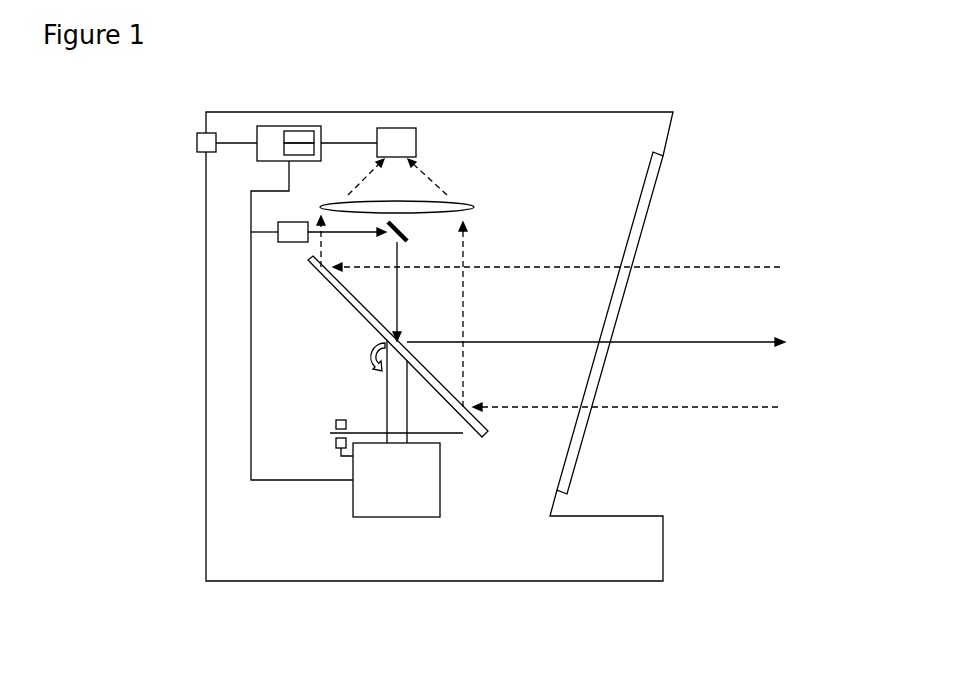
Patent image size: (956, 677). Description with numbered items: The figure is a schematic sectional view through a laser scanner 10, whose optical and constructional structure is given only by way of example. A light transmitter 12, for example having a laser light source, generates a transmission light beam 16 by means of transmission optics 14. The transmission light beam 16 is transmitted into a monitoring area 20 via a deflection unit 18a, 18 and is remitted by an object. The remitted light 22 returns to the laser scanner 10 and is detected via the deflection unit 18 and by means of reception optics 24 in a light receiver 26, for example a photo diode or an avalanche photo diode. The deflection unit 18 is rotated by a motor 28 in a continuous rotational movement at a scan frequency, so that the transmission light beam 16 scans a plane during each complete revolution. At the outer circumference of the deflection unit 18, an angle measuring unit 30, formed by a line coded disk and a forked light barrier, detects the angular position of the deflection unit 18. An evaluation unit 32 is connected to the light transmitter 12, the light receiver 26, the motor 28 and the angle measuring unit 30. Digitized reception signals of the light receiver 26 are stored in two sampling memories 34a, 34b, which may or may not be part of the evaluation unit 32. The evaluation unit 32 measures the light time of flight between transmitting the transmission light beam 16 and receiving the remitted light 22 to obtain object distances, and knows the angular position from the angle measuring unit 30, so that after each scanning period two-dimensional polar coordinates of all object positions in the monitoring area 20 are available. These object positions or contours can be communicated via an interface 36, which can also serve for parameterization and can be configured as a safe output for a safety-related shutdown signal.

The laser scanner 10 is at (472, 307).
The light transmitter 12 is at (312, 293).
The transmission optics 14 is at (279, 232).
The transmission light beam 16 is at (546, 307).
The deflection unit 18 is at (397, 349).
The deflection unit 18a is at (471, 225).
The monitoring area 20 is at (704, 294).
The remitted light 22 is at (548, 313).
The reception optics 24 is at (415, 184).
The light receiver 26 is at (397, 129).
The motor 28 is at (421, 500).
The angle measuring unit 30 is at (319, 441).
The evaluation unit 32 is at (292, 272).
The sampling memory 34a is at (303, 103).
The sampling memory 34b is at (323, 120).
The interface 36 is at (198, 155).